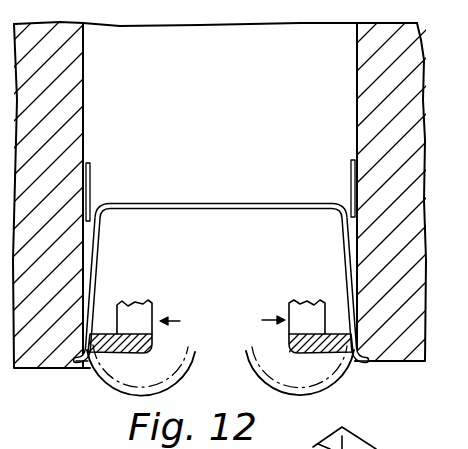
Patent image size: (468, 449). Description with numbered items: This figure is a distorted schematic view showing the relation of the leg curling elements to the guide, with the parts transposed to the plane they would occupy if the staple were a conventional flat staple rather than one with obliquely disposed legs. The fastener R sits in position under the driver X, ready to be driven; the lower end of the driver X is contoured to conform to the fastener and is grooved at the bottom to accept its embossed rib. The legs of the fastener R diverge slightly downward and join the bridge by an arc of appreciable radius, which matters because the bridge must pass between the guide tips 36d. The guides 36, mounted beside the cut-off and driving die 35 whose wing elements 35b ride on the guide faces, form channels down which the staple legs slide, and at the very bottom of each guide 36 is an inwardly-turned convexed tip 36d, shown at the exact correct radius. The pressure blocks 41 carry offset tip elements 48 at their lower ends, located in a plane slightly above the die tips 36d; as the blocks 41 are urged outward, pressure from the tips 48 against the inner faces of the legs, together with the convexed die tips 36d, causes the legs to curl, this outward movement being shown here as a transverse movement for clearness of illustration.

The cut-off and driving die 35 is at (232, 134).
The wing elements 35b is at (92, 218).
The guide 36 is at (33, 368).
The inwardly-turned tip or die 36d is at (75, 368).
The pressure block 41 is at (148, 308).
The offset tip element 48 is at (112, 351).
The driver X is at (253, 195).
The fastener R is at (197, 212).